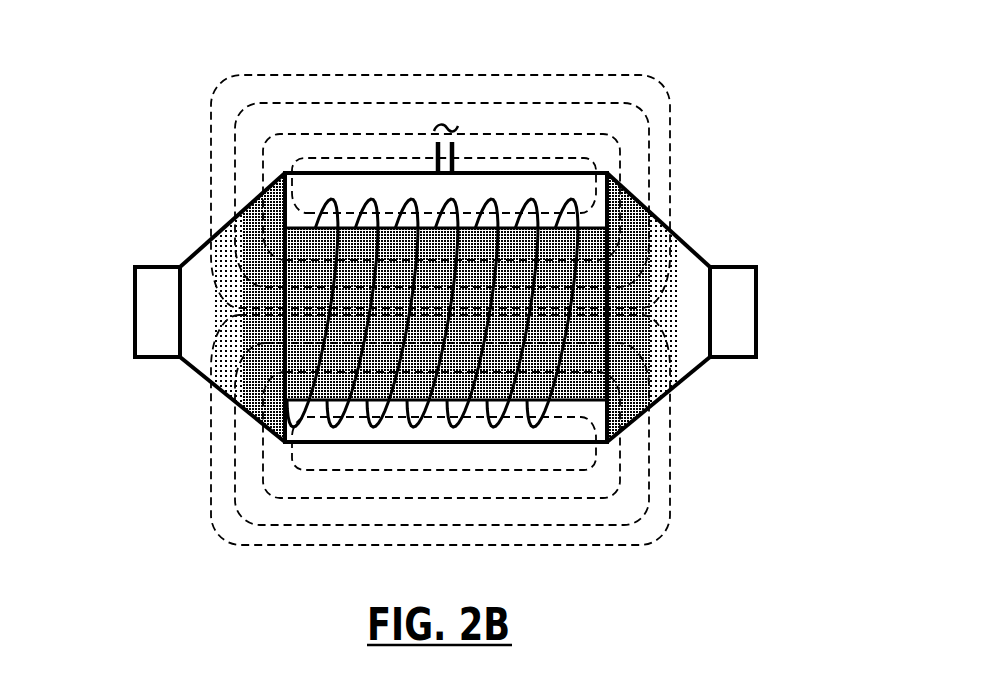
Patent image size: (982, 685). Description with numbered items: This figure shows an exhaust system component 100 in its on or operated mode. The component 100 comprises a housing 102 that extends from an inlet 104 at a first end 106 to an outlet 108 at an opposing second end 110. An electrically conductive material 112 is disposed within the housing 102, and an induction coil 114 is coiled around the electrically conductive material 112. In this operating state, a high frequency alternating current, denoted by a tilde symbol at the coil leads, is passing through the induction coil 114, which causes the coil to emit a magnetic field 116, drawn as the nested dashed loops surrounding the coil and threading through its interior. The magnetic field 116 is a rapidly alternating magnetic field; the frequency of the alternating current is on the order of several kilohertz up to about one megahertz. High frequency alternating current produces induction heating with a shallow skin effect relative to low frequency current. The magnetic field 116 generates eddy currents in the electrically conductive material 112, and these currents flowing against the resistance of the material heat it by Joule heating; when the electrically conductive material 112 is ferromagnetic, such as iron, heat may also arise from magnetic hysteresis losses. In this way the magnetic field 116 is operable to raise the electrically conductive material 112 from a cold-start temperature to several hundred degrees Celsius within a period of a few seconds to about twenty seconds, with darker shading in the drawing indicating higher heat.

The component 100 is at (725, 162).
The housing 102 is at (195, 257).
The inlet 104 is at (134, 340).
The first end 106 is at (119, 281).
The outlet 108 is at (757, 336).
The second end 110 is at (765, 292).
The electrically conductive material 112 is at (303, 245).
The induction coil 114 is at (334, 426).
The magnetic field 116 is at (640, 76).